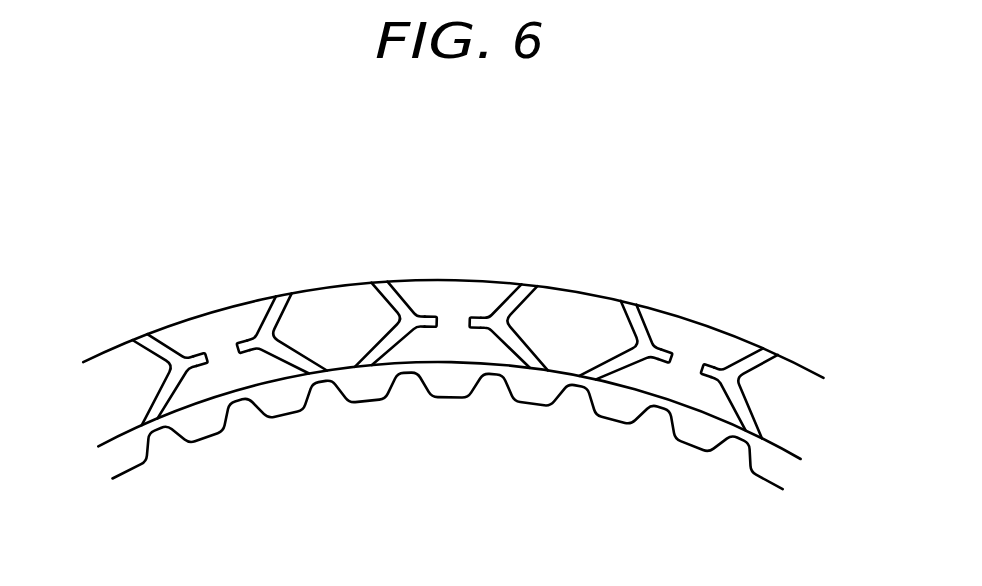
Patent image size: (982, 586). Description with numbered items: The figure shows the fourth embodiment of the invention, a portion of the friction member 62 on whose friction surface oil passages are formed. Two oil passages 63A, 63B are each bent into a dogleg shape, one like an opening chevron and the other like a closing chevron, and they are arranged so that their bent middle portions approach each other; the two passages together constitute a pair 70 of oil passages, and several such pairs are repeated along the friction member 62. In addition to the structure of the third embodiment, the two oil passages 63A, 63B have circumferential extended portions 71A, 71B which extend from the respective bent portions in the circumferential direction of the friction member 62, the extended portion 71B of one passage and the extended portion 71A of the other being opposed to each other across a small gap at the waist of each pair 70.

The friction member 62 is at (447, 300).
The pair of oil passages 70 is at (860, 214).
The oil passage 63A is at (527, 377).
The oil passage 63B is at (373, 367).
The circumferential extended portion 71A is at (258, 343).
The circumferential extended portion 71B is at (205, 352).